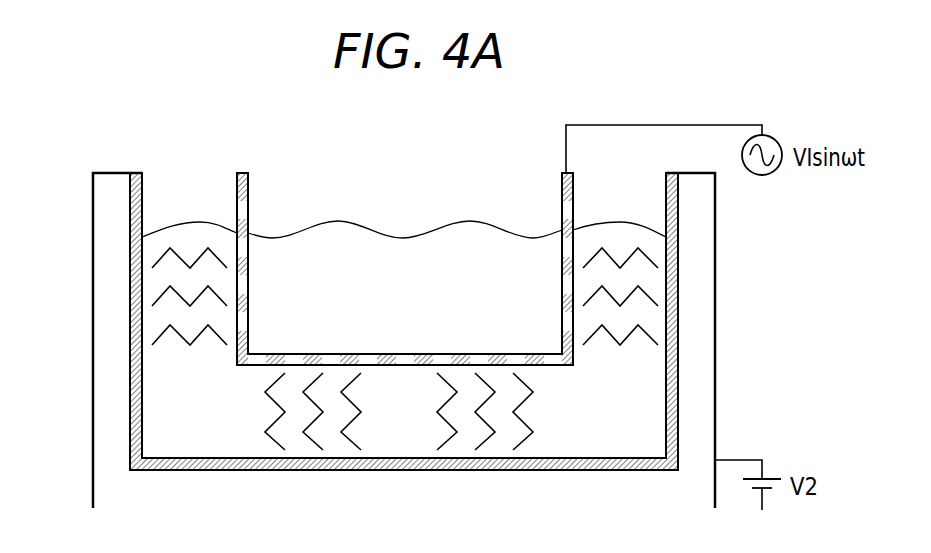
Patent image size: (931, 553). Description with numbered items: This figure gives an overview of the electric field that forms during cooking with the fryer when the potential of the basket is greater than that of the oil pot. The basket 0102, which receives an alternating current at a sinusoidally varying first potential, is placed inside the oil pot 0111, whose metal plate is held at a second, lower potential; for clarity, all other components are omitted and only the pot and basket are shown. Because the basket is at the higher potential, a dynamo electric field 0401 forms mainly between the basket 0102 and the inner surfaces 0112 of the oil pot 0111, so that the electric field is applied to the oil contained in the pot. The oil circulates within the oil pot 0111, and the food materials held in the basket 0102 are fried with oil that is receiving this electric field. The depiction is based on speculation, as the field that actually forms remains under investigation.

The oil pot 0111 is at (117, 172).
The inner surfaces of the oil pot 0112 is at (668, 298).
The basket 0102 is at (243, 172).
The dynamo electric field 0401 is at (650, 252).